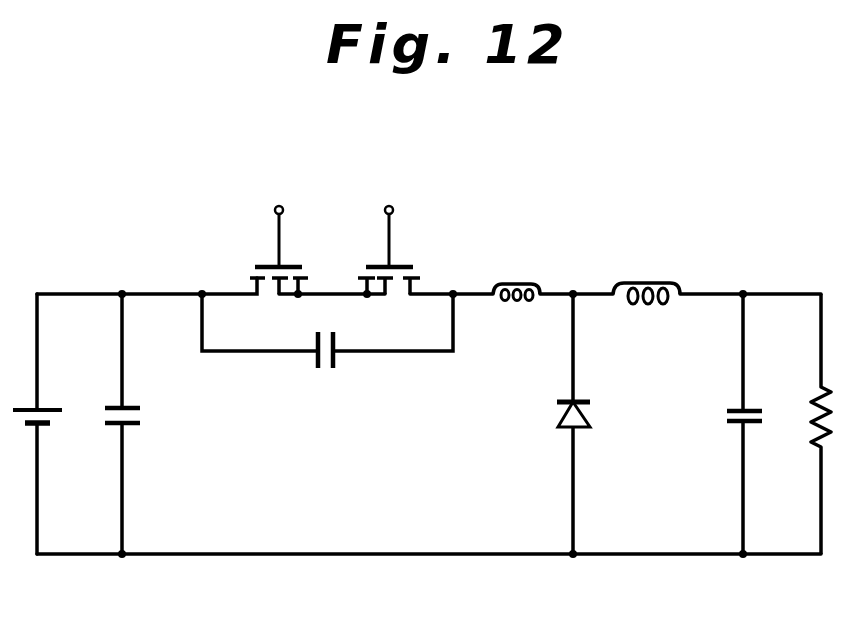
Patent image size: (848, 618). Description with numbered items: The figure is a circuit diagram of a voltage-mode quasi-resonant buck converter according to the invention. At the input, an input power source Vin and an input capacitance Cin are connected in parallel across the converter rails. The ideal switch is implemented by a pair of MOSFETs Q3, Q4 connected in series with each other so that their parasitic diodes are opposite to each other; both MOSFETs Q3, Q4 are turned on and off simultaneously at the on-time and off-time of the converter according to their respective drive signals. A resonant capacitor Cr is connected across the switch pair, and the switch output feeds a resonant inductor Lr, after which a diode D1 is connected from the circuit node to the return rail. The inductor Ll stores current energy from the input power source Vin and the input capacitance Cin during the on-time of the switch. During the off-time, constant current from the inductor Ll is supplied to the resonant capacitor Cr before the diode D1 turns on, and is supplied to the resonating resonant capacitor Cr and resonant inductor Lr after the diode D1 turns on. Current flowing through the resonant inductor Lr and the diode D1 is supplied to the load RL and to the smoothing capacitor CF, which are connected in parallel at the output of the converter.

The input power source Vin is at (53, 415).
The input capacitance Cin is at (142, 416).
The MOSFET Q3 is at (297, 262).
The MOSFET Q4 is at (408, 262).
The resonant capacitor Cr is at (327, 367).
The resonant inductor Lr is at (521, 282).
The diode D1 is at (589, 418).
The input inductor Ll is at (640, 282).
The smoothing capacitor CF is at (769, 411).
The load RL is at (813, 425).